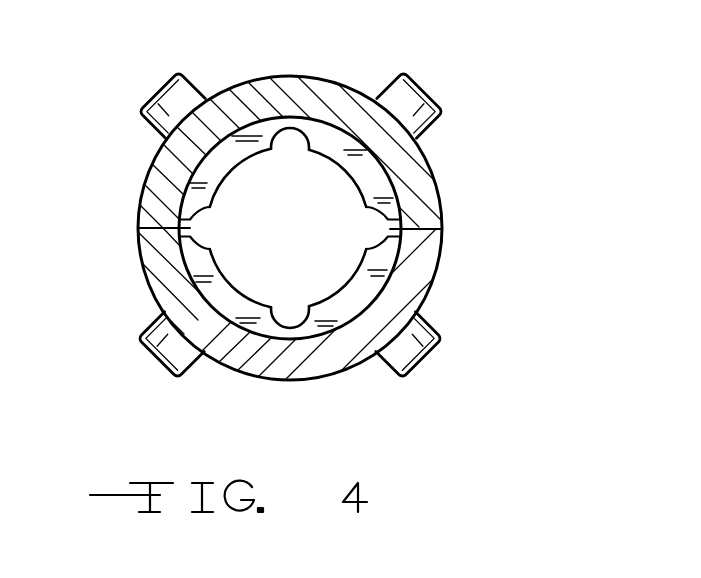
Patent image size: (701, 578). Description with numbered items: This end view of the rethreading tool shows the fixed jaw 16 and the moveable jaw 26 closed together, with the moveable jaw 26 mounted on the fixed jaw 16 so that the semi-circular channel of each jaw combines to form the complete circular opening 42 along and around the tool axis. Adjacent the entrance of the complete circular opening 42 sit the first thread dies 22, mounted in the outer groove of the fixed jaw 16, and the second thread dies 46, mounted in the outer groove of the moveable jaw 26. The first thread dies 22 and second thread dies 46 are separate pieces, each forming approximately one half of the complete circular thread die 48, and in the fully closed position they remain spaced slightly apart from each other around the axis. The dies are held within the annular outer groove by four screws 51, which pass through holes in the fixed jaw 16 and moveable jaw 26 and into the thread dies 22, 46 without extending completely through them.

The fixed jaw 16 is at (335, 362).
The first thread dies 22 is at (383, 263).
The moveable jaw 26 is at (280, 93).
The complete circular opening 42 is at (268, 250).
The second thread dies 46 is at (375, 187).
The complete circular thread die 48 is at (316, 152).
The screws 51 is at (168, 103).